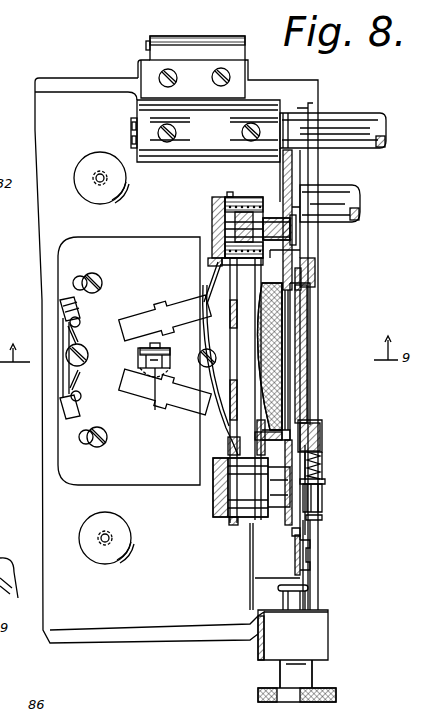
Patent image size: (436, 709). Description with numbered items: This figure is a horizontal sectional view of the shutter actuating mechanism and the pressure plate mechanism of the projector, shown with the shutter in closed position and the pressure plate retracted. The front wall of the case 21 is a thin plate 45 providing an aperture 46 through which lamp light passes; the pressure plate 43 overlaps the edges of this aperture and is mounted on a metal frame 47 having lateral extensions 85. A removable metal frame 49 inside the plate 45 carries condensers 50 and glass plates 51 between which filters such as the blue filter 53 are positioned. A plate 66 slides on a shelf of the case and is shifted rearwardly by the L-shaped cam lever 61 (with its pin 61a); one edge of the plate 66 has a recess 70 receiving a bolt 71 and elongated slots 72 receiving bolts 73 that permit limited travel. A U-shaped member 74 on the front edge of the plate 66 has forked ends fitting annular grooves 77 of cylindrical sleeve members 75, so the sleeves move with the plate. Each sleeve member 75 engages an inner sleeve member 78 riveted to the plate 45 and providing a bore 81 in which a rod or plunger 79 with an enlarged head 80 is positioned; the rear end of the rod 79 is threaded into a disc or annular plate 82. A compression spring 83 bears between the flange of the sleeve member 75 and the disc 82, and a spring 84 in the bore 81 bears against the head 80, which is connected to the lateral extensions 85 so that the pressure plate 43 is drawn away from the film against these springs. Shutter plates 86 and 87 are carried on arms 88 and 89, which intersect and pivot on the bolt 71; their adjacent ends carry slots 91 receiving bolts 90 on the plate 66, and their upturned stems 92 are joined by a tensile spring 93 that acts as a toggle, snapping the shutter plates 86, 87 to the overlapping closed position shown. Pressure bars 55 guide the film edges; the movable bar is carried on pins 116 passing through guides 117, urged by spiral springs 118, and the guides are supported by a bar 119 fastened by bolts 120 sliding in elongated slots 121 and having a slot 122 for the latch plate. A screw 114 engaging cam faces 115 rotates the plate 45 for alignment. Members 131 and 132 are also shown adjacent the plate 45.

The case 21 is at (108, 70).
The plate 45 is at (292, 165).
The shaft end 131 is at (364, 118).
The second shaft 132 is at (345, 200).
The lateral extensions 85 is at (320, 190).
The spring 84 is at (316, 262).
The cylindrical sleeve members 75 is at (224, 200).
The compression spring 83 is at (254, 198).
The inner sleeve member 78 is at (232, 216).
The rod or plunger 79 is at (232, 228).
The head 80 is at (296, 224).
The bore 81 is at (298, 236).
The disc or annular plate 82 is at (212, 258).
The U-shaped member 74 is at (228, 290).
The shutter plate 86 is at (212, 280).
The shutter plate 87 is at (215, 430).
The plate 66 is at (116, 250).
The bolt 73 is at (100, 278).
The elongated slots 72 is at (82, 276).
The arm 88 is at (150, 322).
The arm 89 is at (148, 396).
The cam lever 61 is at (170, 356).
The pivot pin 61a is at (157, 410).
The stems 92 is at (60, 300).
The tensile spring 93 is at (64, 310).
The slots 91 is at (82, 320).
The bolt 90 is at (80, 330).
The bolt 71 is at (68, 348).
The recess 70 is at (63, 368).
The pressure bars 55 is at (302, 280).
The metal frame 47 is at (308, 300).
The aperture 46 is at (304, 318).
The pressure plate 43 is at (290, 335).
The condensers 50 is at (283, 346).
The glass plates 51 is at (292, 360).
The filter 53 is at (292, 374).
The removable metal frame 49 is at (324, 434).
The spiral springs 118 is at (324, 458).
The bolts or pins 116 is at (327, 486).
The guides 117 is at (330, 496).
The bar 119 is at (322, 526).
The elongated slots 121 is at (312, 548).
The bolts 120 is at (312, 566).
The cam faces 115 is at (310, 582).
The slot 122 is at (292, 532).
The screw 114 is at (304, 676).
The annular grooves 77 is at (213, 498).